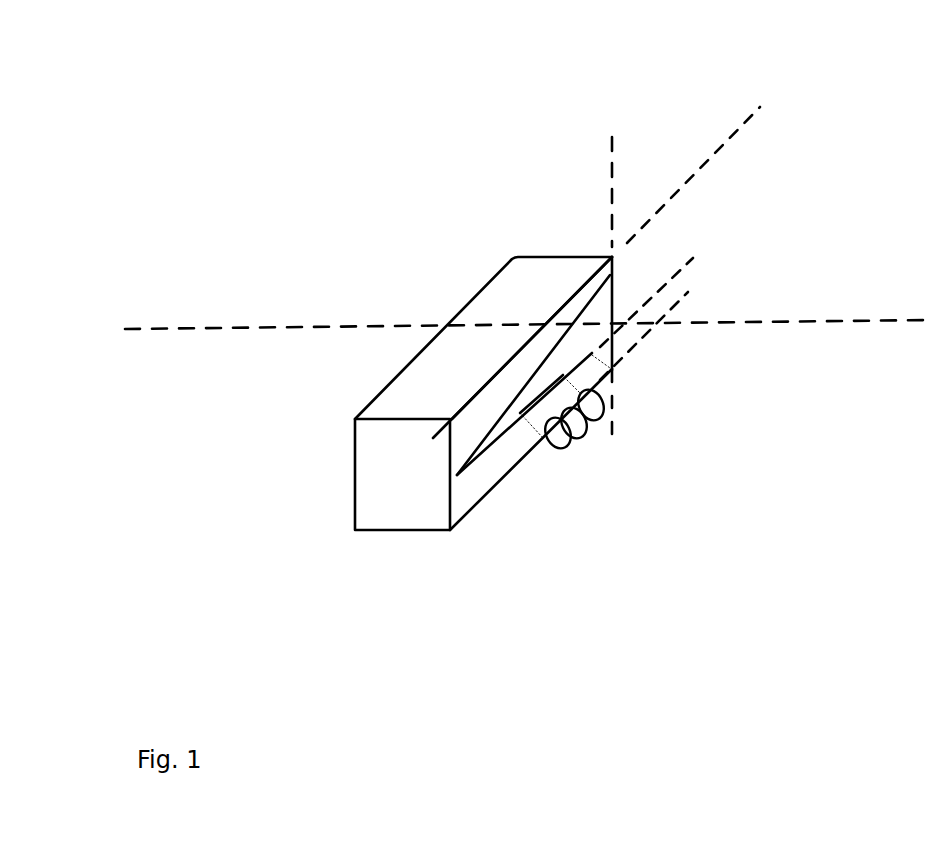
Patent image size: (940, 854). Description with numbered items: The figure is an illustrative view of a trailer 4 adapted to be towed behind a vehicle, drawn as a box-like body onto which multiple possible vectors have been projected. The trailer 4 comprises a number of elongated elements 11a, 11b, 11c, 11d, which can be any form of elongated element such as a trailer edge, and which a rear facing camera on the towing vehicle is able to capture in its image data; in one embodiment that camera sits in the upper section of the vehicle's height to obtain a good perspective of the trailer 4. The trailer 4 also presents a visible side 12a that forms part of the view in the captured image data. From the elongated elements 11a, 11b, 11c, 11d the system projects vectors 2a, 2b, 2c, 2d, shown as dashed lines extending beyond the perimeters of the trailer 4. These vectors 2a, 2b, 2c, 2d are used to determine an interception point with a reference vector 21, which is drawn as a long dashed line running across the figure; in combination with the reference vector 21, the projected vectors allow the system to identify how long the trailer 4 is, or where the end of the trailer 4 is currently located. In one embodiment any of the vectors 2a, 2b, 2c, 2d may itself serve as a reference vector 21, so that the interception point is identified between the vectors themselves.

The trailer 4 is at (512, 297).
The elongated element 11a is at (524, 418).
The elongated element 11b is at (613, 270).
The elongated element 11c is at (568, 300).
The elongated element 11d is at (513, 430).
The visible side 12a is at (465, 493).
The vector 2a is at (677, 308).
The vector 2b is at (612, 145).
The vector 2c is at (765, 102).
The vector 2d is at (683, 268).
The reference vector 21 is at (242, 327).